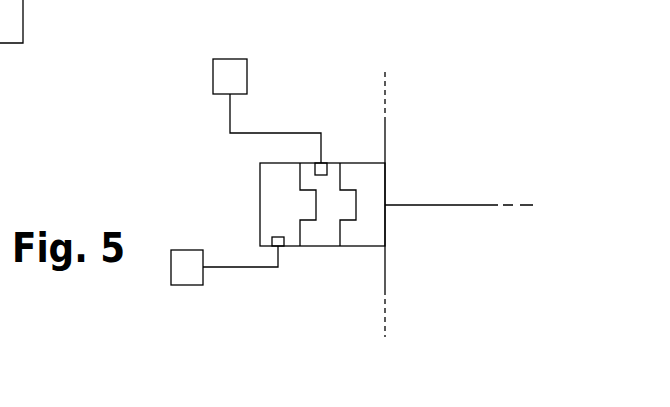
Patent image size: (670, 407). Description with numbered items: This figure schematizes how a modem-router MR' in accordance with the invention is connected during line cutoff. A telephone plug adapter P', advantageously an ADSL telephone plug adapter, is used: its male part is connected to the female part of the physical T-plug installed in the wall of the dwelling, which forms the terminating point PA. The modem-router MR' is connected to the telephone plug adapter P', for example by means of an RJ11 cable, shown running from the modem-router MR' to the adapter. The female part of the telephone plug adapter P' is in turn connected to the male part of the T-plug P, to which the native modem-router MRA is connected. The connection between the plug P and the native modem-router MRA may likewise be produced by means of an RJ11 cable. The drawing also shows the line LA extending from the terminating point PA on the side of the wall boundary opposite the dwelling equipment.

The modem-router MR' is at (223, 47).
The RJ11 cable RJ11 is at (297, 132).
The T-plug P is at (290, 204).
The telephone plug adapter P' is at (310, 244).
The terminating point PA is at (360, 248).
The native modem-router MRA is at (190, 285).
The line A LA is at (433, 205).